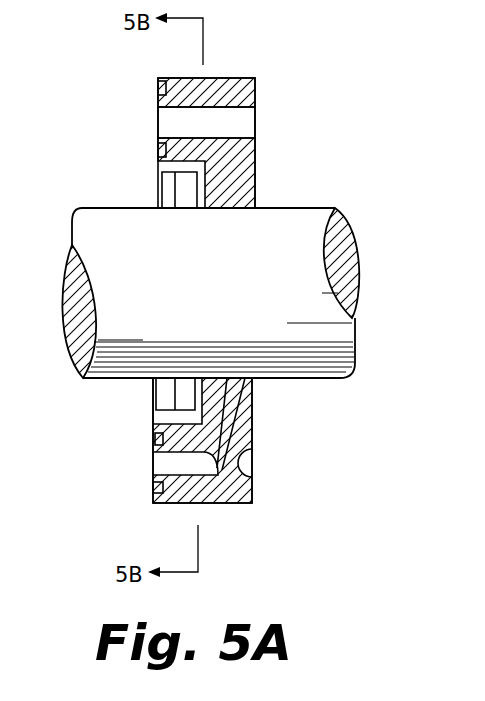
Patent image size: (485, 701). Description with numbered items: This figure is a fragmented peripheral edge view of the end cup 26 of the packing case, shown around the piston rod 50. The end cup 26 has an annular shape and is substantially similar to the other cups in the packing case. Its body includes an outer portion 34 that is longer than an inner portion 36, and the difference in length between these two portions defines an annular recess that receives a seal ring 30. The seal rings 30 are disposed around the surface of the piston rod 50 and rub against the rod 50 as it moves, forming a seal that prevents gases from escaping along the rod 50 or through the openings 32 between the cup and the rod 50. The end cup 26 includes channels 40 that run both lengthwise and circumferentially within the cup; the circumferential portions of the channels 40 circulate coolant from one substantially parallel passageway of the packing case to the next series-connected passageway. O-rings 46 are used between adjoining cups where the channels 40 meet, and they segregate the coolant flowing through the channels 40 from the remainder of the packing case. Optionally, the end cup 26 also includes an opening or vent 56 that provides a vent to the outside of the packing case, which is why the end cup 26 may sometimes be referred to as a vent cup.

The end cup 26 is at (367, 64).
The seal rings 30 is at (158, 192).
The openings 32 is at (253, 208).
The outer portion 34 is at (222, 92).
The inner portion 36 is at (232, 173).
The channels 40 is at (160, 120).
The o-rings 46 is at (158, 88).
The piston rod 50 is at (345, 262).
The vent 56 is at (157, 465).